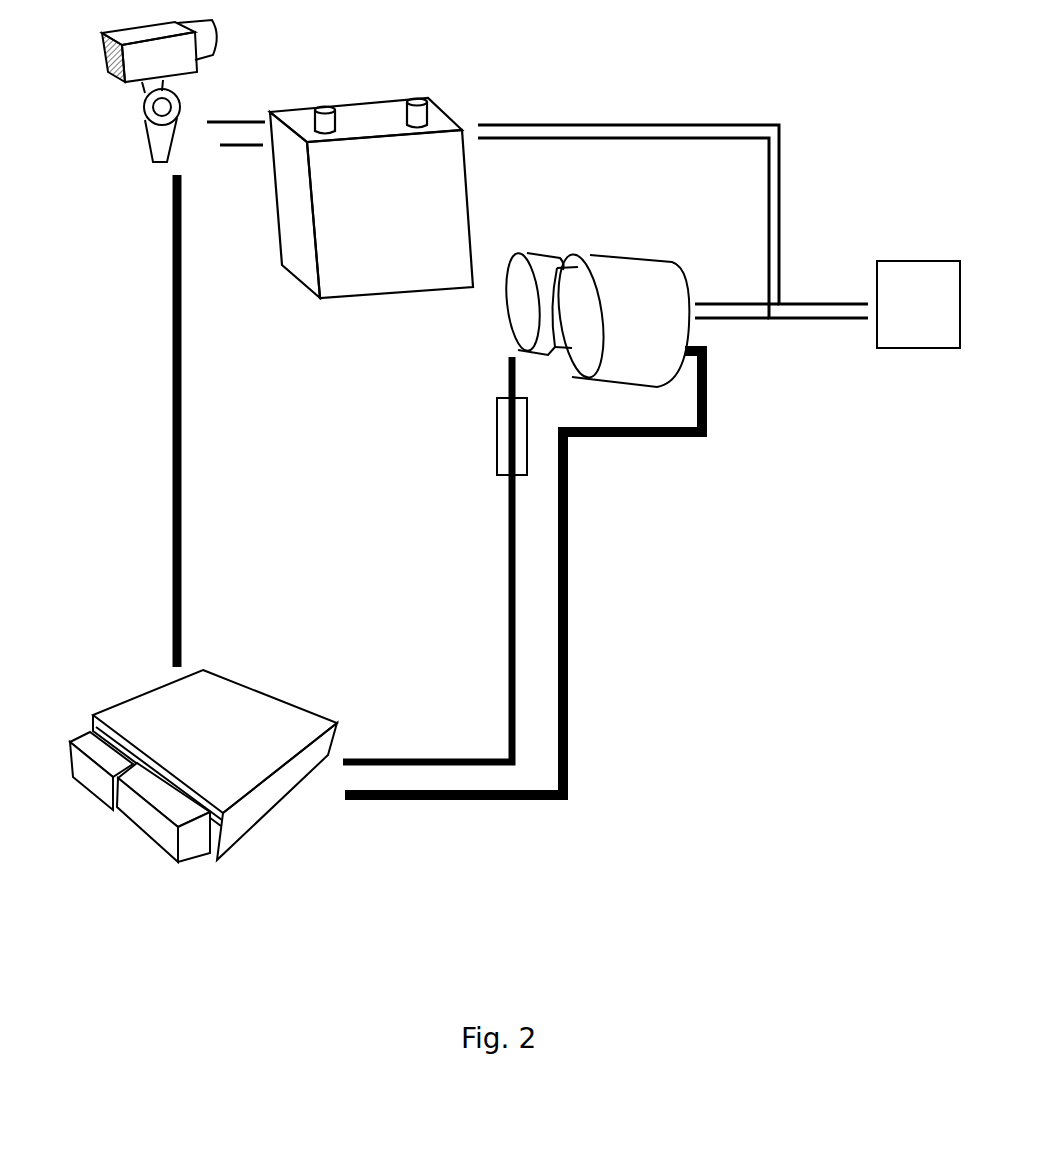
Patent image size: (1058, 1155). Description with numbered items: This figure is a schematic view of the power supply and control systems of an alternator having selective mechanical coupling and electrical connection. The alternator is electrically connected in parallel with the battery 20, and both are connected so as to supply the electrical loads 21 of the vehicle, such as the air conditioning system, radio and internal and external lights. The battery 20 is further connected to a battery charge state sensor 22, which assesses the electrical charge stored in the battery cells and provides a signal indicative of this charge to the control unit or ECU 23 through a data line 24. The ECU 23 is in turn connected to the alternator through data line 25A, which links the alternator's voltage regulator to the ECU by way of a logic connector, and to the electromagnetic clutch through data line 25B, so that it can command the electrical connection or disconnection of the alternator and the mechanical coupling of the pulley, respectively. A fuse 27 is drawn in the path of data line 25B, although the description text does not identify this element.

The battery 20 is at (433, 106).
The electrical loads 21 is at (918, 304).
The battery charge state sensor 22 is at (226, 75).
The control unit or ECU 23 is at (259, 856).
The data line 24 is at (166, 500).
The data line 25A is at (581, 649).
The data line 25B is at (488, 613).
The fuse 27 is at (482, 417).